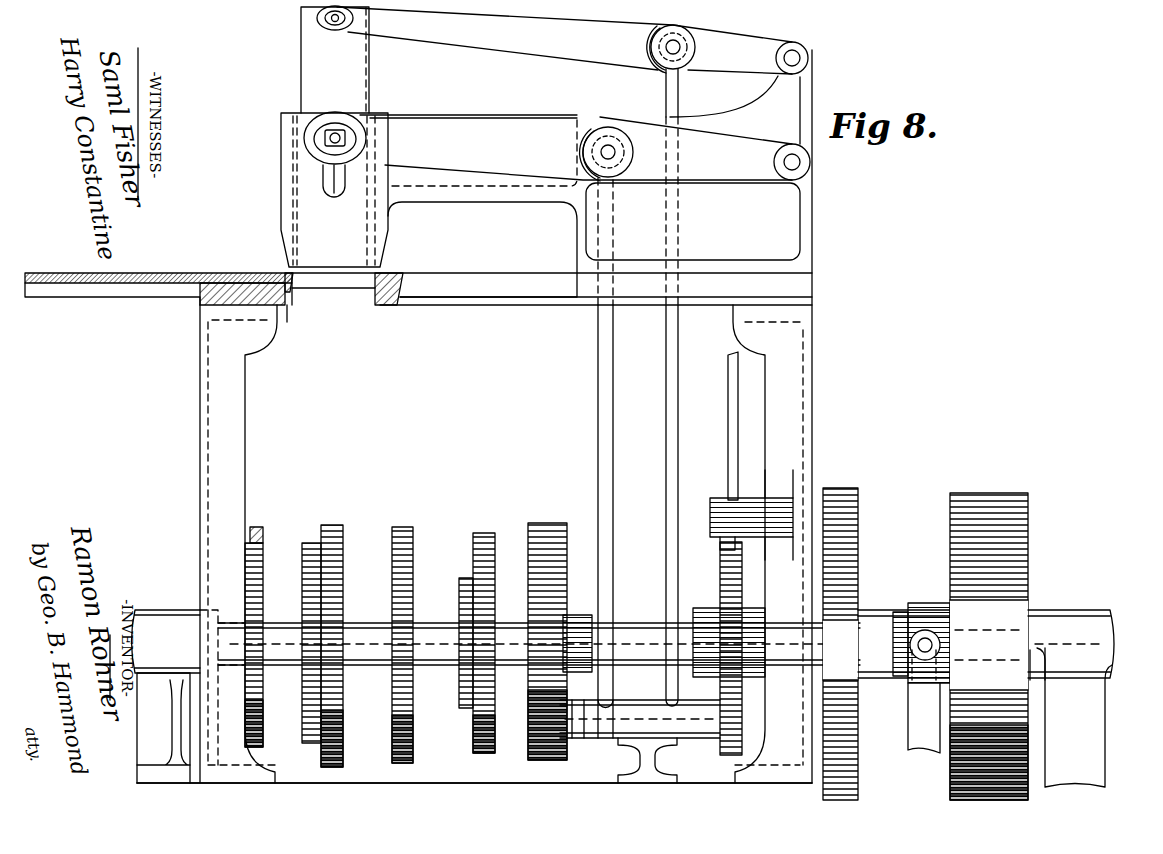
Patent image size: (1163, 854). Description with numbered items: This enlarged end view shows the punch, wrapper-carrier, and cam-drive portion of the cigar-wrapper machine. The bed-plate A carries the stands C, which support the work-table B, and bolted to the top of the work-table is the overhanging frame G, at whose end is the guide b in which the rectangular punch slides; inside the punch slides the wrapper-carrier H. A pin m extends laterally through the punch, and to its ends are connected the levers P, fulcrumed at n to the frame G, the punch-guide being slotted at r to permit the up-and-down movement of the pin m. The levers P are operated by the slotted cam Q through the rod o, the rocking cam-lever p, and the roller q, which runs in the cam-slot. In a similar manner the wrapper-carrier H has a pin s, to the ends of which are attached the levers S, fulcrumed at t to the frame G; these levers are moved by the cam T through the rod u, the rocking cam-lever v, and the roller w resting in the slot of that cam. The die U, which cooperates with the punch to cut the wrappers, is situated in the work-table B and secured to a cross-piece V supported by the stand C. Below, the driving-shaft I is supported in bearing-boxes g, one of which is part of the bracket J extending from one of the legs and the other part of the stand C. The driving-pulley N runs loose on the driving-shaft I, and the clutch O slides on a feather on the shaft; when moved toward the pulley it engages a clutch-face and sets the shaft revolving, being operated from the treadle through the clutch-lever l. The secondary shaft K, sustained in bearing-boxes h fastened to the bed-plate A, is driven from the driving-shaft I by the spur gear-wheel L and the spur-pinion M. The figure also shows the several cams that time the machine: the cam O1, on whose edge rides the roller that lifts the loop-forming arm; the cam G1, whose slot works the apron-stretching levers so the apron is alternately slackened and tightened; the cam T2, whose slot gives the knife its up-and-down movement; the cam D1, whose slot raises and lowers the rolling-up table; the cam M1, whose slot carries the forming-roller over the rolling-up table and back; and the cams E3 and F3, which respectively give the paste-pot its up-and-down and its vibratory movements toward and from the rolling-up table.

The bed-plate A is at (350, 792).
The work-table B is at (126, 272).
The stands C is at (474, 416).
The overhanging frame G is at (466, 200).
The wrapper-carrier H is at (335, 60).
The driving-shaft I is at (1114, 646).
The bracket J is at (1074, 717).
The secondary shaft K is at (424, 624).
The spur gear-wheel L is at (858, 512).
The spur-pinion M is at (866, 610).
The driving-pulley N is at (989, 493).
The clutch O is at (915, 602).
The levers P is at (576, 148).
The slotted cam Q is at (546, 522).
The levers S is at (564, 62).
The cam T is at (720, 582).
The die U is at (307, 300).
The cross-piece V is at (285, 322).
The cam O1 is at (252, 533).
The cam G1 is at (264, 700).
The cam T2 is at (306, 541).
The cam D1 is at (331, 526).
The cam M1 is at (403, 526).
The cam E3 is at (463, 577).
The cam F3 is at (484, 532).
The guide b is at (281, 185).
The bearing-boxes g is at (1062, 652).
The bearing-boxes h is at (163, 685).
The clutch-lever l is at (924, 701).
The pin m is at (346, 168).
The fulcrum n is at (800, 162).
The rod o is at (598, 402).
The rocking cam-lever p is at (594, 739).
The roller q is at (575, 739).
The slot r is at (334, 195).
The pin s is at (338, 30).
The fulcrum t is at (798, 53).
The rod u is at (726, 388).
The rocking cam-lever v is at (685, 738).
The roller w is at (716, 700).